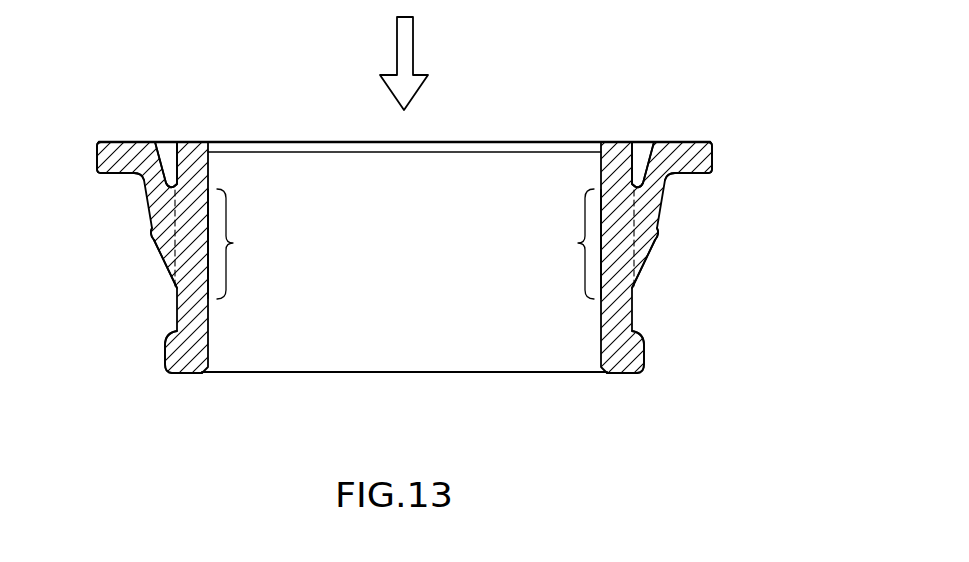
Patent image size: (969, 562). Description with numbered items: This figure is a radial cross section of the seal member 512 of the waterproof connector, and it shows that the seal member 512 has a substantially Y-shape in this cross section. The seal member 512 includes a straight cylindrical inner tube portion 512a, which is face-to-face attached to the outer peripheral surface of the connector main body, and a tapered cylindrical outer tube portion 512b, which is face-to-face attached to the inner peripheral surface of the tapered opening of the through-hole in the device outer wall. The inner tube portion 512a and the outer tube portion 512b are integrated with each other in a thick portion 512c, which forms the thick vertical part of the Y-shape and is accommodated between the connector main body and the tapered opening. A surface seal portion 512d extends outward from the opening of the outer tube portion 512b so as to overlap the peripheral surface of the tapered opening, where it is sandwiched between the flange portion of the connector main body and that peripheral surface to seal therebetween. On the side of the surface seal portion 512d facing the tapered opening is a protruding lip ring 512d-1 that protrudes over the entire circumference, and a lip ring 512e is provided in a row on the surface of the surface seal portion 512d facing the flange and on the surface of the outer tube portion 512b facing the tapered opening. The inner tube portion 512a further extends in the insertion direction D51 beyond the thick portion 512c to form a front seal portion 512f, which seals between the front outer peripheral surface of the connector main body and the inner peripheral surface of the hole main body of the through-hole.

The seal member 512 is at (408, 384).
The inner tube portion 512a is at (190, 150).
The outer tube portion 512b is at (147, 205).
The thick portion 512c is at (233, 243).
The surface seal portion 512d is at (99, 149).
The protruding lip ring 512d-1 is at (128, 174).
The lip ring 512e is at (115, 141).
The front seal portion 512f is at (185, 352).
The insertion direction D51 is at (397, 47).